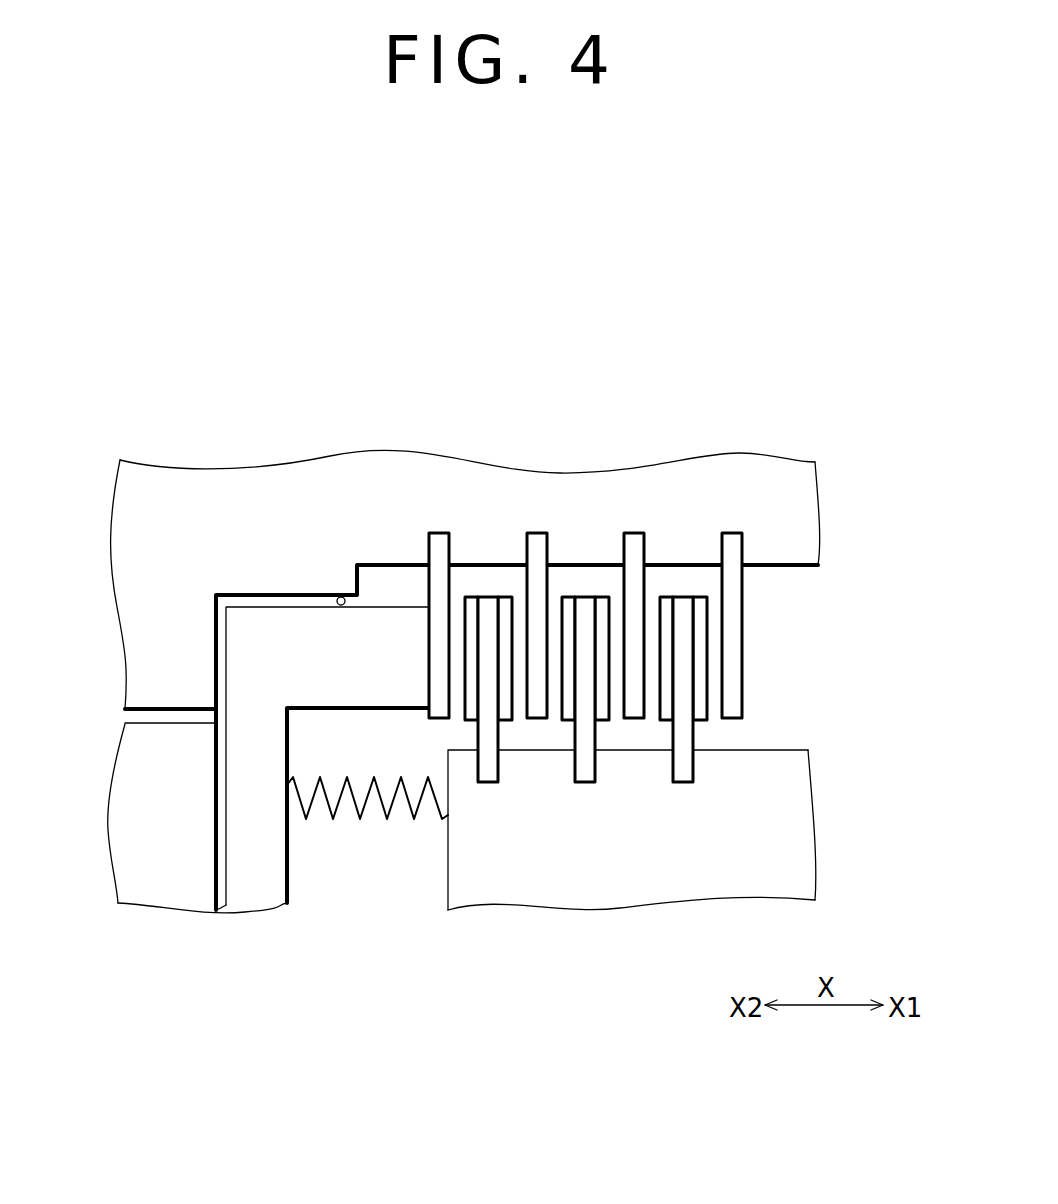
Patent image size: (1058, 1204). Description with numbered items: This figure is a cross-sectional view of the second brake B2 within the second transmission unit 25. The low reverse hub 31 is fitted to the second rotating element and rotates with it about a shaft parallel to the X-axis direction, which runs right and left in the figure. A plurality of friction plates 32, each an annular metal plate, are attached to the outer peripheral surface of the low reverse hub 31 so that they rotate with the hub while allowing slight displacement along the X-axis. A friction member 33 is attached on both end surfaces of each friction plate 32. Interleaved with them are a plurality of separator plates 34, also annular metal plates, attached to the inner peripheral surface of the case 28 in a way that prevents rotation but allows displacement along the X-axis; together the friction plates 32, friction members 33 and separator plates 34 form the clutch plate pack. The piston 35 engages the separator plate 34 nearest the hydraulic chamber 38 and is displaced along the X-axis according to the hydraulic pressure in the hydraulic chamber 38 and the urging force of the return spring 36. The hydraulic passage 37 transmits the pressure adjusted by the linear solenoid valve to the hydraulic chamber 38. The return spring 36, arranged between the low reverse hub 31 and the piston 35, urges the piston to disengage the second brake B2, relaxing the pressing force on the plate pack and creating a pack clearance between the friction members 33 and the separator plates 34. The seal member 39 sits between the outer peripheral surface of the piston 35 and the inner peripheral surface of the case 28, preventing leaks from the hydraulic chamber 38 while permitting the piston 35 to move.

The second transmission unit 25 is at (183, 375).
The case 28 is at (780, 512).
The low reverse hub 31 is at (768, 828).
The friction plate 32 is at (487, 605).
The friction member 33 is at (472, 712).
The separator plate 34 is at (443, 540).
The piston 35 is at (277, 633).
The return spring 36 is at (292, 806).
The hydraulic passage 37 is at (152, 718).
The hydraulic chamber 38 is at (222, 905).
The seal member 39 is at (344, 597).
The second brake B2 is at (773, 652).